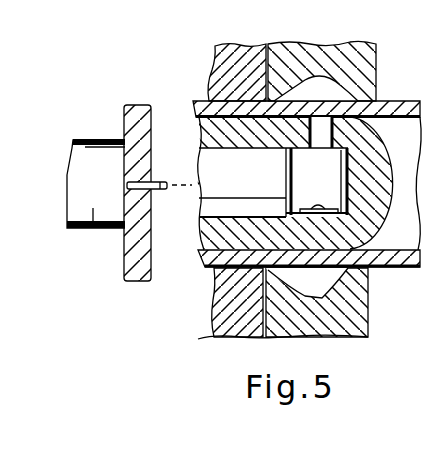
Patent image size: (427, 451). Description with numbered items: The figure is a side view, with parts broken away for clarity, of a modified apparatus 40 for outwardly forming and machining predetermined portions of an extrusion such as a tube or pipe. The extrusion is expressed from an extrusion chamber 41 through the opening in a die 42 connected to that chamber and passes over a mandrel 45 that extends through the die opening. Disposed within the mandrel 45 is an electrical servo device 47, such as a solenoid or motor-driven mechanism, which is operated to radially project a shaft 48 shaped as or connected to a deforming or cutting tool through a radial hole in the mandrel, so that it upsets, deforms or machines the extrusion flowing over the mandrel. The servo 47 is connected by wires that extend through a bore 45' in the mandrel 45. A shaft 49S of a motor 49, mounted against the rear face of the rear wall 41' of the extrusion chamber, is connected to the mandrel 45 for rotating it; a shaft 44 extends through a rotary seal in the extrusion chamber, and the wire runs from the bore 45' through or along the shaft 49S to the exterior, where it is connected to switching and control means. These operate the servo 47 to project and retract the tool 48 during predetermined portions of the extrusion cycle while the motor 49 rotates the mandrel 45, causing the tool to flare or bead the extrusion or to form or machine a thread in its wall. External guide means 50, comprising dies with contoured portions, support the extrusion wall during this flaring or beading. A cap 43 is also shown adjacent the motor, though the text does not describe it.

The apparatus 40 is at (118, 58).
The extrusion chamber 41 is at (227, 63).
The rear wall 41' is at (116, 196).
The die 42 is at (204, 339).
The cap 43 is at (96, 168).
The shaft 44 is at (191, 102).
The mandrel 45 is at (309, 183).
The bore 45' is at (178, 145).
The electrical servo device 47 is at (320, 184).
The shaft 48 is at (286, 163).
The motor 49 is at (92, 230).
The shaft 49S is at (162, 202).
The external guide means 50 is at (357, 41).